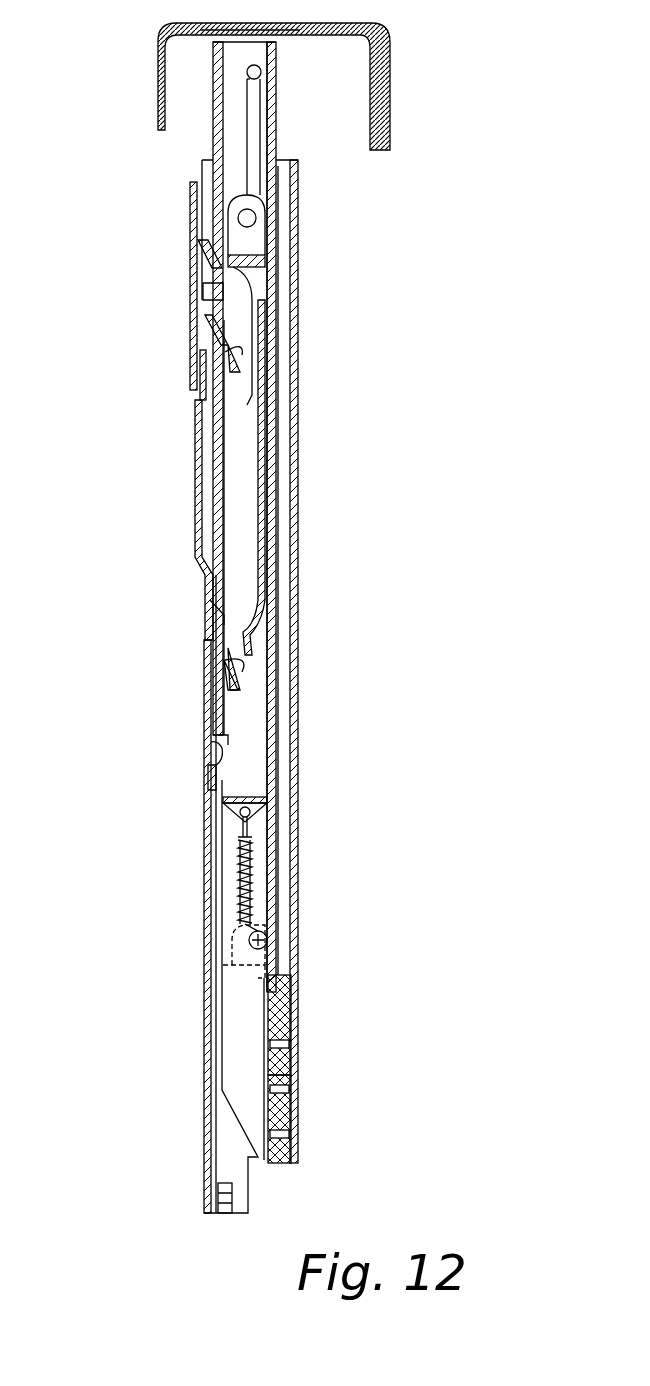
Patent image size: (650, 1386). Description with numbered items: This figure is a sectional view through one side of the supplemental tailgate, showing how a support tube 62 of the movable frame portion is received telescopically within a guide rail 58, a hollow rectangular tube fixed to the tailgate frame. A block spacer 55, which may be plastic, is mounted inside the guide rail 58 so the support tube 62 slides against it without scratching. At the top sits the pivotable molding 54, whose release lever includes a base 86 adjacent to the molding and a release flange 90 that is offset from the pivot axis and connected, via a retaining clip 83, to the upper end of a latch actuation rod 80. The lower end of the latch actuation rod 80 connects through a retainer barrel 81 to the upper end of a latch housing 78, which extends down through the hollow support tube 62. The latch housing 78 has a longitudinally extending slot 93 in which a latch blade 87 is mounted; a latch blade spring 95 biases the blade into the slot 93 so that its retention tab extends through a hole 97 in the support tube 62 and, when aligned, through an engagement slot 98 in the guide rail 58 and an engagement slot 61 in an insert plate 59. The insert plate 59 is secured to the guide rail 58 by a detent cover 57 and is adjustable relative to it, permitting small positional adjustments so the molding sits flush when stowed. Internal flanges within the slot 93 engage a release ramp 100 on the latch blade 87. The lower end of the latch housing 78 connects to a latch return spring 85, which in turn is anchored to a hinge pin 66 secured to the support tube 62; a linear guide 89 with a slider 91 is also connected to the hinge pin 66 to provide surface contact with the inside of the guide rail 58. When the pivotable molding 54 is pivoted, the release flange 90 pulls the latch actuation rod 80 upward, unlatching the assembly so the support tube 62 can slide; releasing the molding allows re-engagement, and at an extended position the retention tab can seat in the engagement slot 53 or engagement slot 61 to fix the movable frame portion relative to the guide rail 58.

The engagement slot 53 is at (212, 600).
The pivotable molding 54 is at (390, 102).
The block spacer 55 is at (200, 440).
The detent cover 57 is at (190, 200).
The guide rail 58 is at (298, 337).
The insert plate 59 is at (210, 330).
The engagement slot 61 is at (212, 290).
The support tube 62 is at (262, 92).
The hinge pin 66 is at (250, 940).
The latch housing 78 is at (258, 200).
The latch actuation rod 80 is at (230, 140).
The retainer barrel 81 is at (200, 248).
The retaining clip 83 is at (265, 72).
The latch return spring 85 is at (240, 840).
The base 86 is at (220, 46).
The latch blade 87 is at (278, 377).
The linear guide 89 is at (291, 1145).
The release flange 90 is at (248, 80).
The slider 91 is at (291, 990).
The slot 93 is at (262, 292).
The latch blade spring 95 is at (281, 445).
The hole 97 is at (222, 768).
The engagement slot 98 is at (215, 740).
The release ramp 100 is at (213, 370).